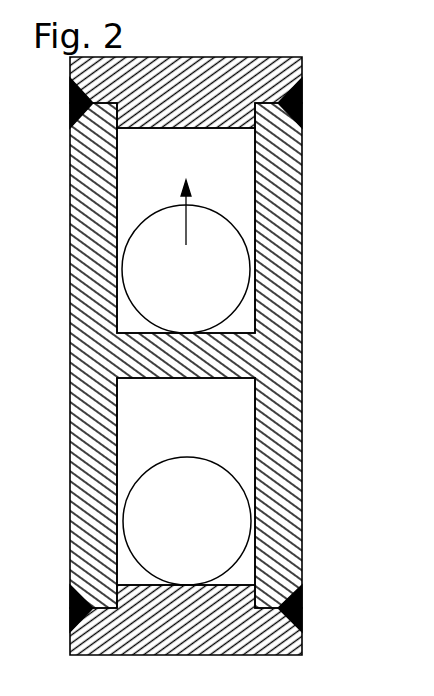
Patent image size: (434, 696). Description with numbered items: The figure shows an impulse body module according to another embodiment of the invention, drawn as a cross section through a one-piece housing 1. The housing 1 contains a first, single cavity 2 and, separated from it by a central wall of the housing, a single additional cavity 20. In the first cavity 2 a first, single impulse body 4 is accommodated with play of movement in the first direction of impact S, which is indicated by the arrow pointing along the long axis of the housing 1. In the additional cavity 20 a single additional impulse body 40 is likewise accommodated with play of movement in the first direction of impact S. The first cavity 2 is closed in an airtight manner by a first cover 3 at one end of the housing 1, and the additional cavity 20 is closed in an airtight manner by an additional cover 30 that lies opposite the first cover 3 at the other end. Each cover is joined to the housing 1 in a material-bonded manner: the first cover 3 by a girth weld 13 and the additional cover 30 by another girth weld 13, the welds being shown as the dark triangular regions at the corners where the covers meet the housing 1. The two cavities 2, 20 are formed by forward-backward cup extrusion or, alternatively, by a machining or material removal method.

The housing 1 is at (303, 252).
The first cover 3 is at (302, 68).
The additional cover 30 is at (70, 643).
The girth weld 13 is at (303, 100).
The first cavity 2 is at (139, 166).
The additional cavity 20 is at (166, 421).
The first impulse body 4 is at (209, 300).
The additional impulse body 40 is at (236, 551).
The first direction of impact S is at (190, 204).